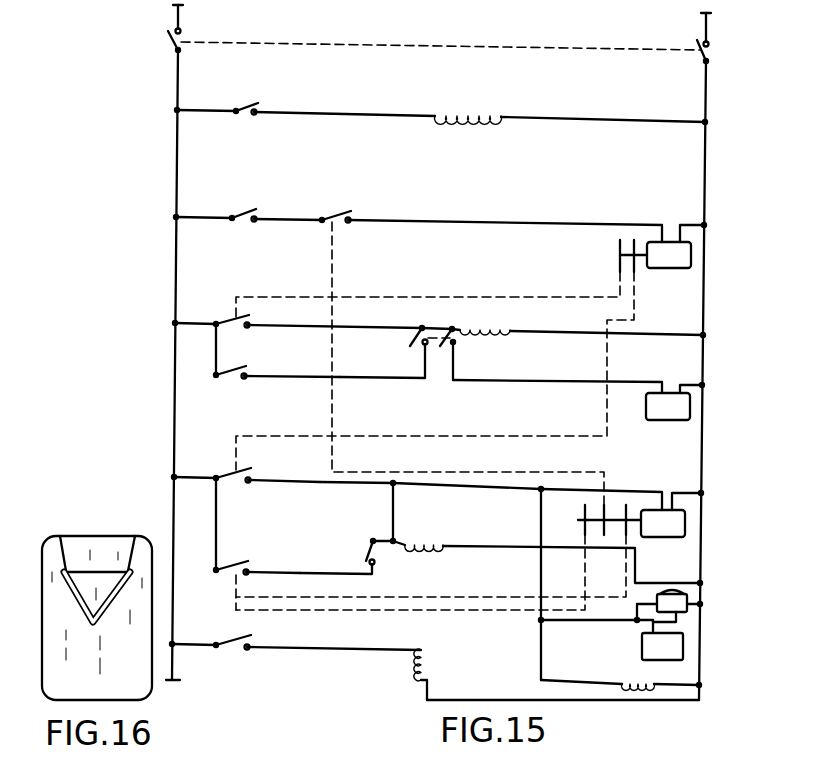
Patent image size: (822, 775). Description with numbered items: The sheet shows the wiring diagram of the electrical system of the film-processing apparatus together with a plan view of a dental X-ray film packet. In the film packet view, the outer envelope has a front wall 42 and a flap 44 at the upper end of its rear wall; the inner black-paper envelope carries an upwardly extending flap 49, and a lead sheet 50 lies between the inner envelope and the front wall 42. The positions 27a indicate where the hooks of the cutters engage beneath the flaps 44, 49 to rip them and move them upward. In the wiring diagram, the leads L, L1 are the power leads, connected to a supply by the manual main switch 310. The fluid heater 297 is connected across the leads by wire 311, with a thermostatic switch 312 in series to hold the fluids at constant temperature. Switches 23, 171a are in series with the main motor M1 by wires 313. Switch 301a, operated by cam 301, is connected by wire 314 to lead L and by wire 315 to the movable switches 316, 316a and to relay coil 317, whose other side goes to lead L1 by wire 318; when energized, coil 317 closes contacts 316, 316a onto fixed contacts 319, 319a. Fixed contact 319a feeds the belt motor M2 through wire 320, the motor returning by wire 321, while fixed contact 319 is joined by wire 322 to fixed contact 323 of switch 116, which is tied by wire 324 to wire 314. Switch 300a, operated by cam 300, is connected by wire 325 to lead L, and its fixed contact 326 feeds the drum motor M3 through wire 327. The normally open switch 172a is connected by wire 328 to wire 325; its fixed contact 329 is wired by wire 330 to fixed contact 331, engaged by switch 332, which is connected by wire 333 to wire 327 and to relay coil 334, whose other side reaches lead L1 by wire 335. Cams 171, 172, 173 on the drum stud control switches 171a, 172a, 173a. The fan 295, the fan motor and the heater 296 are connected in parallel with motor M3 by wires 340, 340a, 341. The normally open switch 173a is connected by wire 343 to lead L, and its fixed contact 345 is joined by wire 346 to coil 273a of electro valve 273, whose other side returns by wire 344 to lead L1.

In FIG. 15, the manual main switch 310 is at (182, 42).
In FIG. 15, the wire 311 is at (618, 124).
In FIG. 15, the thermostatic switch 312 is at (242, 118).
In FIG. 15, the electric heater 297 is at (498, 124).
In FIG. 15, the wires 313 is at (492, 226).
In FIG. 15, the switch 23 is at (246, 223).
In FIG. 15, the switch 171a is at (345, 223).
In FIG. 15, the main motor M1 is at (669, 275).
In FIG. 15, the cam 300 is at (631, 244).
In FIG. 15, the cam 301 is at (620, 254).
In FIG. 15, the power lead L is at (172, 270).
In FIG. 15, the power lead L1 is at (706, 281).
In FIG. 15, the wire 314 is at (190, 326).
In FIG. 15, the switch 301a is at (234, 318).
In FIG. 15, the wire 315 is at (334, 345).
In FIG. 15, the movable switch 316 is at (410, 342).
In FIG. 15, the fixed contact 319 is at (423, 346).
In FIG. 15, the movable switch 316a is at (450, 348).
In FIG. 15, the fixed contact 319a is at (456, 348).
In FIG. 15, the relay coil 317 is at (511, 343).
In FIG. 15, the wire 318 is at (633, 337).
In FIG. 15, the wire 324 is at (215, 362).
In FIG. 15, the switch 116 is at (240, 369).
In FIG. 15, the fixed contact 323 is at (251, 380).
In FIG. 15, the wire 322 is at (341, 380).
In FIG. 15, the wire 320 is at (558, 384).
In FIG. 15, the wire 321 is at (696, 390).
In FIG. 15, the belt motor M2 is at (669, 423).
In FIG. 15, the wire 325 is at (193, 480).
In FIG. 15, the switch 300a is at (243, 472).
In FIG. 15, the fixed contact 326 is at (252, 484).
In FIG. 15, the wire 327 is at (343, 485).
In FIG. 15, the wire 333 is at (395, 510).
In FIG. 15, the wire 328 is at (215, 541).
In FIG. 15, the switch 172a is at (253, 566).
In FIG. 15, the fixed contact 329 is at (250, 574).
In FIG. 15, the wire 330 is at (304, 572).
In FIG. 15, the switch 332 is at (368, 557).
In FIG. 15, the fixed contact 331 is at (377, 565).
In FIG. 15, the relay coil 334 is at (428, 540).
In FIG. 15, the wire 335 is at (508, 547).
In FIG. 15, the cam 173 is at (585, 514).
In FIG. 15, the cam 171 is at (607, 505).
In FIG. 15, the cam 172 is at (628, 505).
In FIG. 15, the drum motor M3 is at (665, 542).
In FIG. 15, the wire 340 is at (566, 621).
In FIG. 15, the wire 340a is at (701, 603).
In FIG. 15, the fan 295 is at (640, 648).
In FIG. 15, the wire 341 is at (556, 683).
In FIG. 15, the electric heater 296 is at (622, 689).
In FIG. 15, the wire 343 is at (190, 648).
In FIG. 15, the switch 173a is at (236, 650).
In FIG. 15, the fixed contact 345 is at (250, 652).
In FIG. 15, the wire 346 is at (368, 640).
In FIG. 15, the electro valve 273 is at (432, 661).
In FIG. 15, the coil 273a is at (412, 675).
In FIG. 15, the wire 344 is at (553, 705).
In FIG. 16, the front wall 42 is at (62, 650).
In FIG. 16, the flap 44 is at (80, 552).
In FIG. 16, the positions 27a is at (62, 541).
In FIG. 16, the flap 49 is at (84, 586).
In FIG. 16, the lead sheet 50 is at (90, 615).